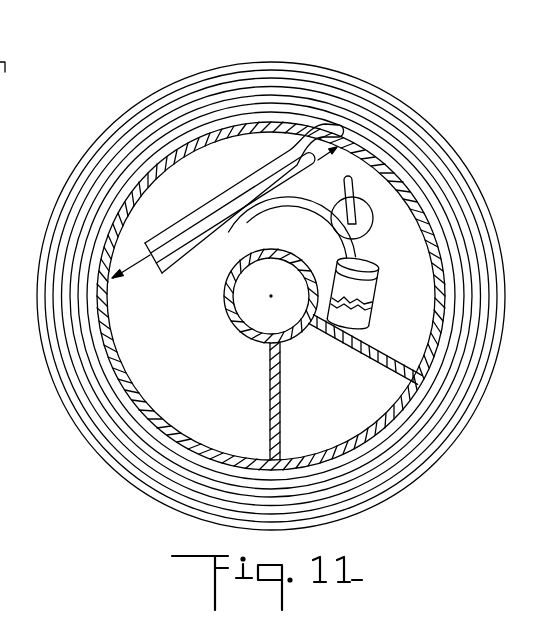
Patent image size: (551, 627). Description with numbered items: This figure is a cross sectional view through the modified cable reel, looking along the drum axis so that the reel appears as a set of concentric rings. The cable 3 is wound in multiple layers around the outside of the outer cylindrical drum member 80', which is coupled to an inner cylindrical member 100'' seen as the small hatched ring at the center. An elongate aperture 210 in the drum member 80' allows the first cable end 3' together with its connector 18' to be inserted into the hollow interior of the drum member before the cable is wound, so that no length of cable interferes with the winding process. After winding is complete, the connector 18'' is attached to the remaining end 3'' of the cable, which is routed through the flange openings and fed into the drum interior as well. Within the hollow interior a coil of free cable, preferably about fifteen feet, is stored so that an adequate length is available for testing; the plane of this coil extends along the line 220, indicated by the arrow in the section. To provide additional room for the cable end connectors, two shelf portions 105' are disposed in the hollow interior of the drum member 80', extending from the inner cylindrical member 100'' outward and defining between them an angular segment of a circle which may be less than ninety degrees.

The cable 3 is at (252, 296).
The elongate aperture 210 is at (262, 127).
The outer cylindrical member 80' is at (260, 308).
The inner cylindrical member 100'' is at (257, 307).
The shelf portions 105' is at (311, 387).
The remaining end of the cable 3'' is at (302, 155).
The first cable end 3' is at (367, 220).
The connector 18'' is at (425, 184).
The connector 18' is at (370, 292).
The line 220 is at (145, 265).